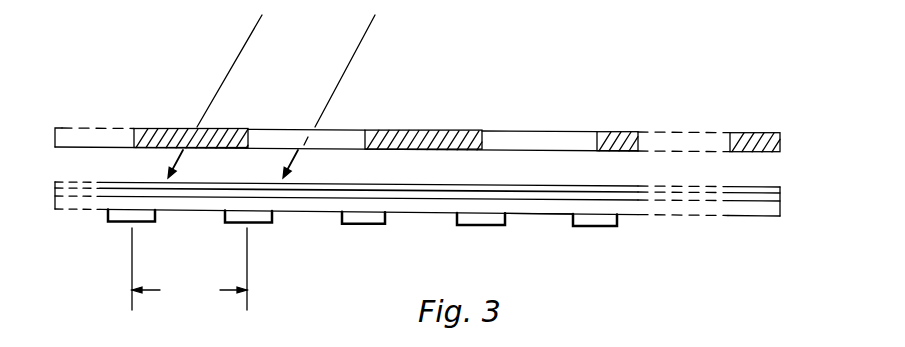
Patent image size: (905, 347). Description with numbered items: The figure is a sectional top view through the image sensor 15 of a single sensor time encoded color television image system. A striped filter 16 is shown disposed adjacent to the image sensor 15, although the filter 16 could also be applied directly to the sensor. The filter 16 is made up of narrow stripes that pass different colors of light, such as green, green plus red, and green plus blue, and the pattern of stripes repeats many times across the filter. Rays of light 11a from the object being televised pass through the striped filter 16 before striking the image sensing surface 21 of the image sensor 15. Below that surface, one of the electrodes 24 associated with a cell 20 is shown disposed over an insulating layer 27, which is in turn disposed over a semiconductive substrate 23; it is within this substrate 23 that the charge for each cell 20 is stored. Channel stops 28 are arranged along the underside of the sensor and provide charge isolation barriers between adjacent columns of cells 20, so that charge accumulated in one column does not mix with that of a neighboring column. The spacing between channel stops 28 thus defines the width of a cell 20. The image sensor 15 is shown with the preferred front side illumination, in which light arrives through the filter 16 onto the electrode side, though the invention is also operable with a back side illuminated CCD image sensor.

The light ray 11a is at (237, 58).
The striped filter 16 is at (782, 143).
The image sensor 15 is at (792, 178).
The electrode 24 is at (447, 189).
The insulating layer 27 is at (313, 197).
The semiconductive substrate 23 is at (757, 211).
The channel stops 28 is at (605, 224).
The image sensing surface 21 is at (539, 237).
The cell 20 is at (197, 328).